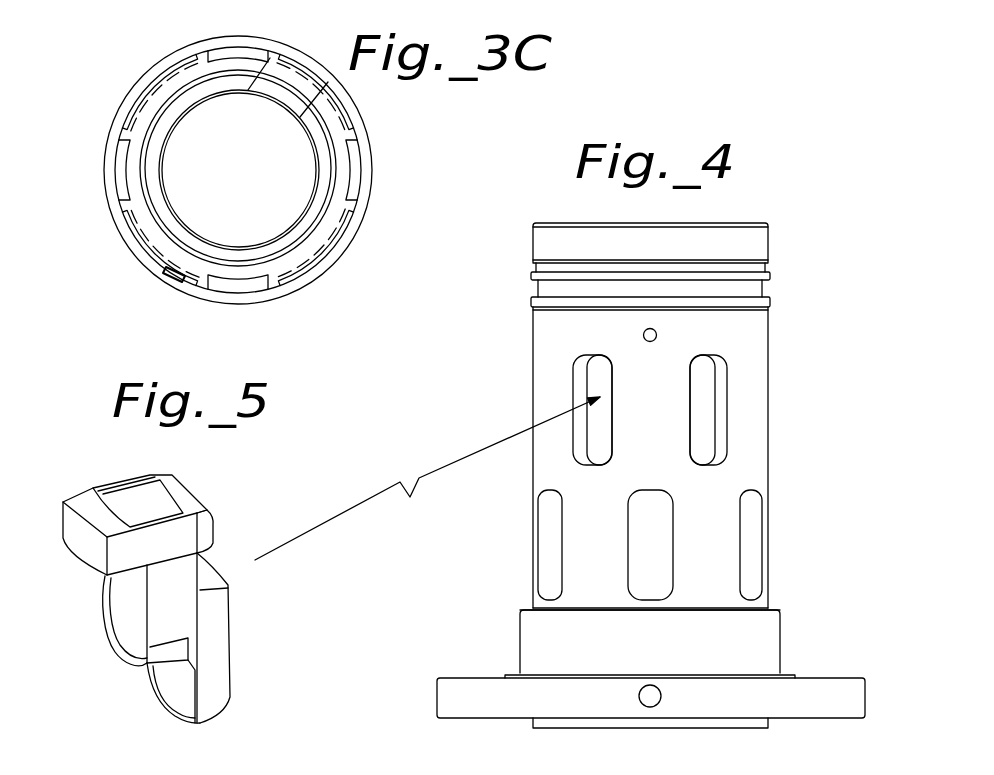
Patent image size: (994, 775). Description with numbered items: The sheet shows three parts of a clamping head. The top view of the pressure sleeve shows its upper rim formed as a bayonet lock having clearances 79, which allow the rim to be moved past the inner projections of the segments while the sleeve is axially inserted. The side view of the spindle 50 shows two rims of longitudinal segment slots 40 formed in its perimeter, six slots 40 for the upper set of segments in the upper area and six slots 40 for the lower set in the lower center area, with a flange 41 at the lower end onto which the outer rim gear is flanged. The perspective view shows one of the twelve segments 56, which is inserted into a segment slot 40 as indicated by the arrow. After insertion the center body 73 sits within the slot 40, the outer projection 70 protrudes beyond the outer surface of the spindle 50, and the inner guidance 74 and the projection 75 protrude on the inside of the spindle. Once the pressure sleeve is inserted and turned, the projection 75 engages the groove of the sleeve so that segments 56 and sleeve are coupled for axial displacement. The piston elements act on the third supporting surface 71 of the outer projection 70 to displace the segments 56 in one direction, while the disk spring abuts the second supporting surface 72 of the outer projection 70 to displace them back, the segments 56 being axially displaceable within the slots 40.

In FIG. 3C, the clearances 79 is at (236, 58).
In FIG. 4, the spindle 50 is at (651, 450).
In FIG. 4, the segment slots 40 is at (705, 410).
In FIG. 4, the flange 41 is at (447, 684).
In FIG. 5, the segment 56 is at (142, 586).
In FIG. 5, the outer projection 70 is at (141, 507).
In FIG. 5, the third supporting surface 71 is at (78, 503).
In FIG. 5, the second supporting surface 72 is at (82, 560).
In FIG. 5, the center body 73 is at (163, 628).
In FIG. 5, the inner guidance 74 is at (227, 650).
In FIG. 5, the projection 75 is at (207, 538).